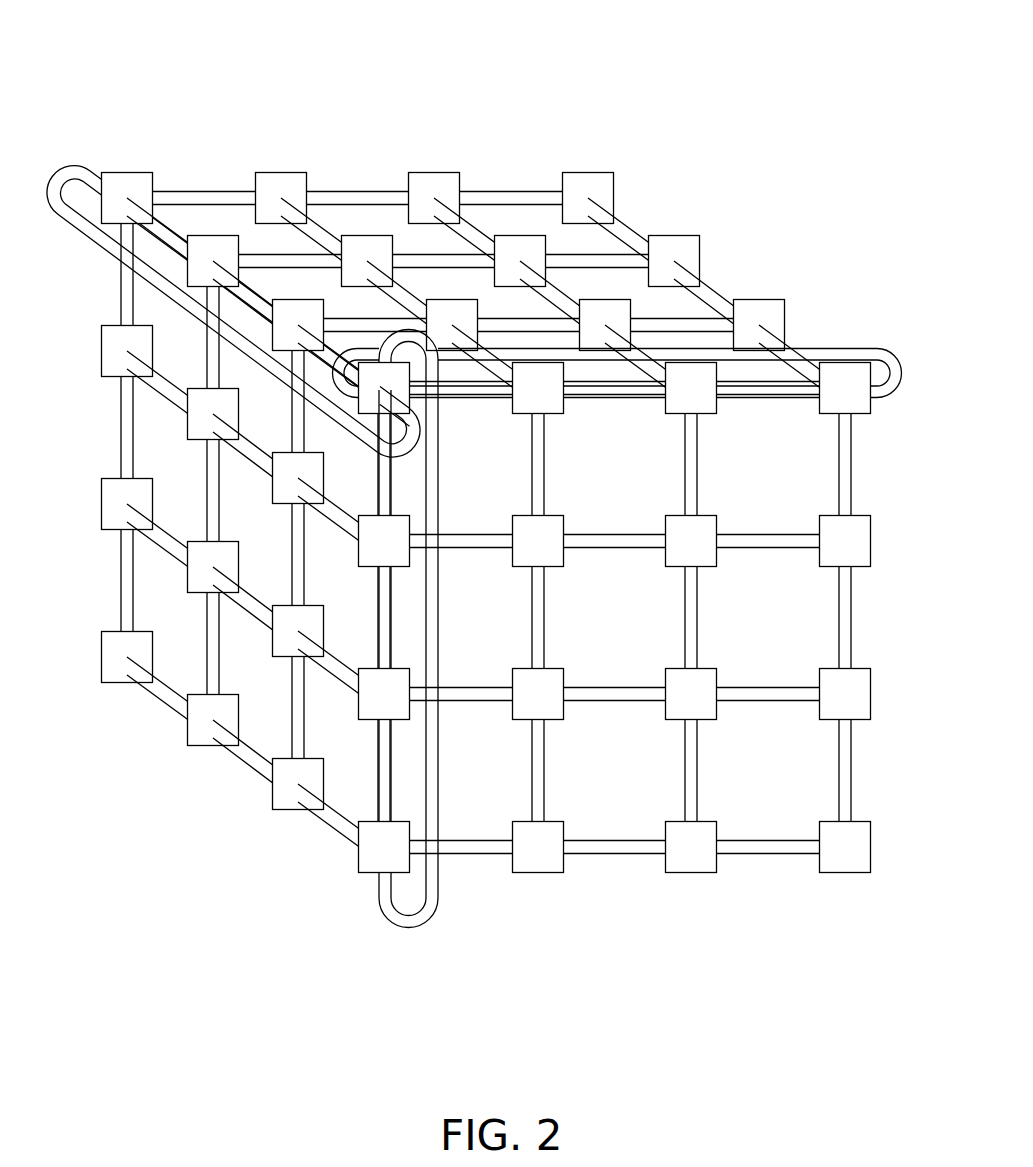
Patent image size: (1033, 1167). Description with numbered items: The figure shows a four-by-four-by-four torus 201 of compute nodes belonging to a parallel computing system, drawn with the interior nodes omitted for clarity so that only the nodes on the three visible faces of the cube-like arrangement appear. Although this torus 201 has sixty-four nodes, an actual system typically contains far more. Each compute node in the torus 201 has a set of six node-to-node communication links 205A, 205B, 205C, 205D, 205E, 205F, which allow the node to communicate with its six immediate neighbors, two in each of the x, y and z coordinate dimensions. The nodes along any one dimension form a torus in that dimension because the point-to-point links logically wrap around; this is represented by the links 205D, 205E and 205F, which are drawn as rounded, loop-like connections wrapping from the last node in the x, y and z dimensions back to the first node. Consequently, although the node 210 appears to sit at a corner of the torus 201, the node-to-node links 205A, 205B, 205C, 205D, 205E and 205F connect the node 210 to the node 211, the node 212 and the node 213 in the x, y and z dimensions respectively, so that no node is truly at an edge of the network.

The torus 201 is at (494, 508).
The node-to-node communication link 205A is at (468, 396).
The node-to-node communication link 205B is at (400, 476).
The node-to-node communication link 205C is at (333, 373).
The node-to-node communication link 205D is at (849, 347).
The node-to-node communication link 205E is at (406, 930).
The node-to-node communication link 205F is at (58, 168).
The node 210 is at (362, 416).
The node 211 is at (873, 416).
The node 212 is at (357, 862).
The node 213 is at (136, 172).